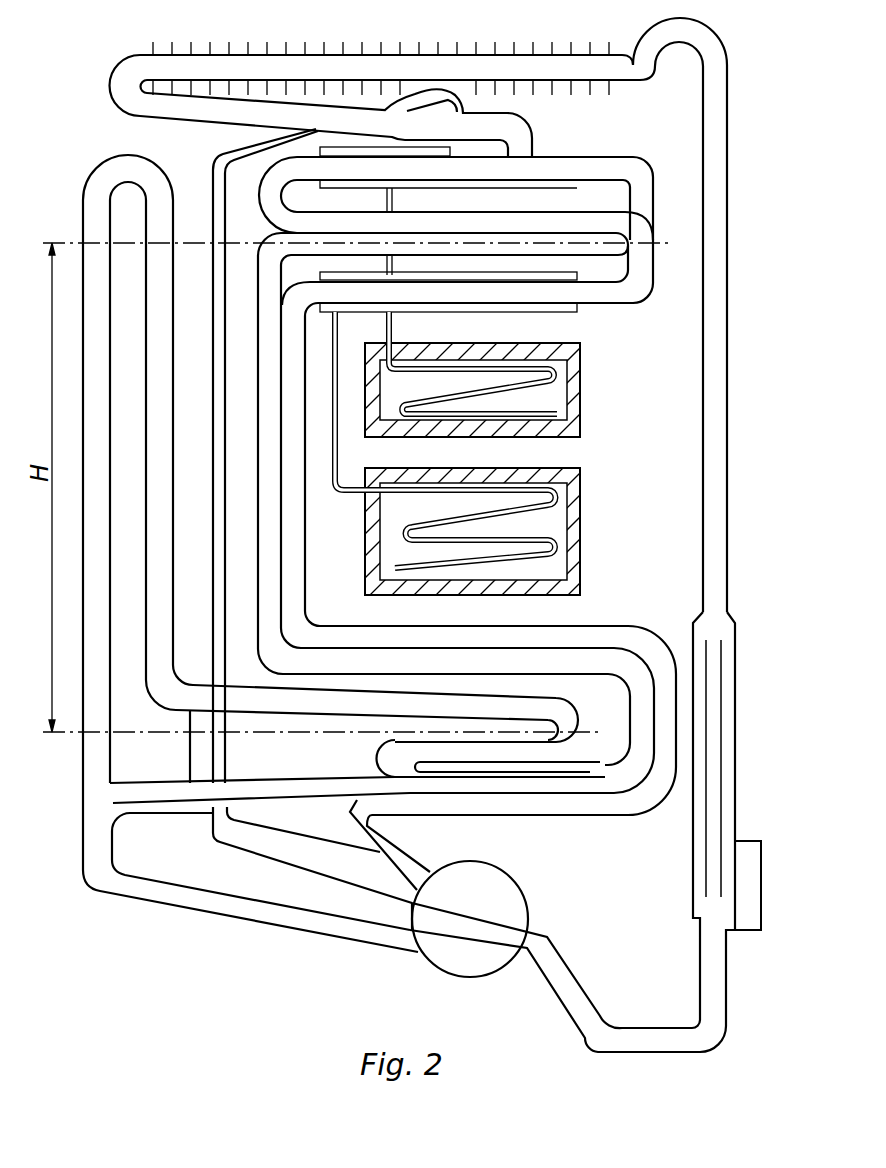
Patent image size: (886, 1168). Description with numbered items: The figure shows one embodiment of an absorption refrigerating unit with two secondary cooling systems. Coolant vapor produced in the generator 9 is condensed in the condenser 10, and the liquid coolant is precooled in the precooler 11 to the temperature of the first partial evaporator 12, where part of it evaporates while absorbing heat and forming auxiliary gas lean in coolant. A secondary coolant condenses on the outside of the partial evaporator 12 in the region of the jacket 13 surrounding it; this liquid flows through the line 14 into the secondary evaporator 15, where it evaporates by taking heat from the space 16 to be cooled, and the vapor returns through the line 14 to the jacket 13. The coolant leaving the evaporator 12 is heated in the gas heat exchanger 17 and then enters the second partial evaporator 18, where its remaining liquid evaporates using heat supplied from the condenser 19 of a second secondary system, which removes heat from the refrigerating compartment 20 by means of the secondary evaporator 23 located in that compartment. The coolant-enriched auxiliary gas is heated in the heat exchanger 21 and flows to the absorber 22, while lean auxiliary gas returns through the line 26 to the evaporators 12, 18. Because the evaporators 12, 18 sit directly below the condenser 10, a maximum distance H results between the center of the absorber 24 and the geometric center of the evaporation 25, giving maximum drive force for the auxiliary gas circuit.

The generator 9 is at (713, 798).
The condenser 10 is at (632, 65).
The precooler 11 is at (470, 127).
The first partial evaporator 12 is at (580, 157).
The jacket 13 is at (600, 181).
The line 14 is at (430, 200).
The secondary evaporator 15 is at (553, 377).
The space to be cooled 16 is at (550, 400).
The gas heat exchanger 17 is at (587, 226).
The second partial evaporator 18 is at (513, 296).
The condenser of second secondary system 19 is at (570, 307).
The refrigerating compartment 20 is at (542, 527).
The heat exchanger 21 is at (488, 636).
The absorber 22 is at (556, 711).
The secondary evaporator 23 is at (553, 503).
The center of the absorber 24 is at (563, 731).
The geometric center of the evaporation 25 is at (518, 242).
The line 26 is at (544, 661).